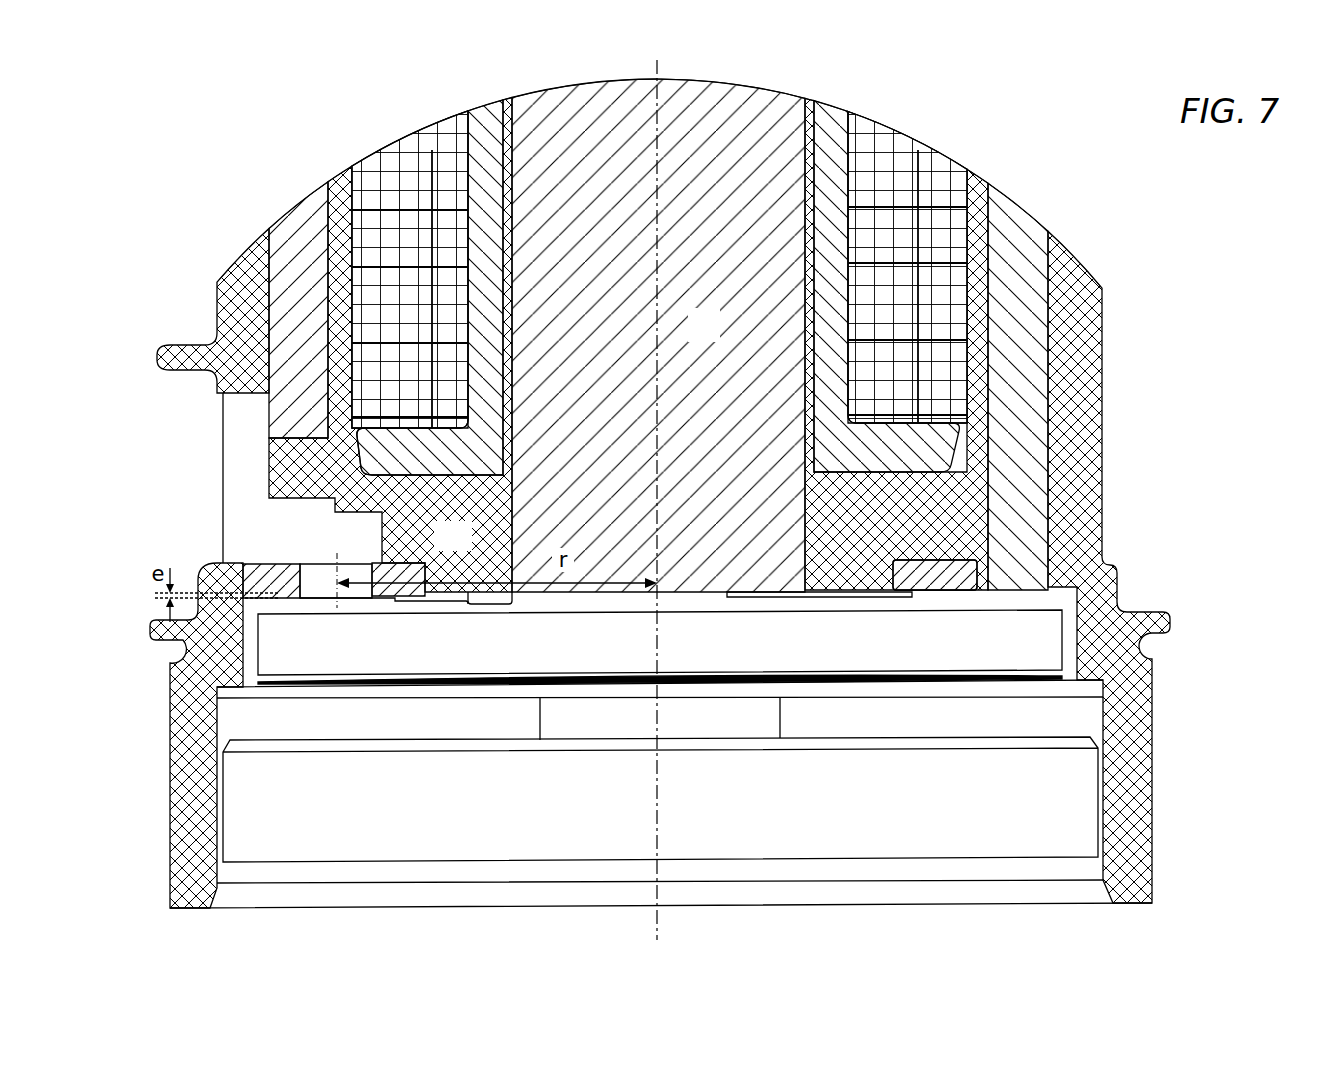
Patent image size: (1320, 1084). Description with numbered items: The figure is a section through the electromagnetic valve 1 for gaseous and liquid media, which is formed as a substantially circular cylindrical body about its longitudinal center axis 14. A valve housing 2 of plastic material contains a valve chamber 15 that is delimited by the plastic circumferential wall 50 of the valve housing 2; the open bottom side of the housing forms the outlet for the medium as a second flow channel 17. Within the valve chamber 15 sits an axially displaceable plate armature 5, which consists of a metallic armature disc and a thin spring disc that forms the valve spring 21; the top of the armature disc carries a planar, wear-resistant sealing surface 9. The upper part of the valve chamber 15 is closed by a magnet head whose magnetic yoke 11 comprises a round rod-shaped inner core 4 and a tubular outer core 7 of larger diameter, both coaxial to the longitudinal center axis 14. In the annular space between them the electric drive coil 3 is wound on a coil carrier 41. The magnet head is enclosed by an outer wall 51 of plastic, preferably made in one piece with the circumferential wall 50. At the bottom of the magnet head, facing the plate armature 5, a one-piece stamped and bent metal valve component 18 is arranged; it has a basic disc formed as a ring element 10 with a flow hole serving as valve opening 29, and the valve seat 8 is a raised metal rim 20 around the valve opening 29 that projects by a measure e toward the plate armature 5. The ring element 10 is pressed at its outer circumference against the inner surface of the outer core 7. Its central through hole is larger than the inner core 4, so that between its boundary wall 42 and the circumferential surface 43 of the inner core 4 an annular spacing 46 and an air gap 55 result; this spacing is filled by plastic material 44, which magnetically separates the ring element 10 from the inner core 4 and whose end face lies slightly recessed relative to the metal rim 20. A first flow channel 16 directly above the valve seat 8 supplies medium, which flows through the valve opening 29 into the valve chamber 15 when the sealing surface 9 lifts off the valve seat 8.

The electromagnetic valve 1 is at (250, 198).
The valve housing 2 is at (1185, 659).
The electric drive coil 3 is at (400, 178).
The inner core 4 is at (712, 338).
The plate armature 5 is at (258, 648).
The outer core 7 is at (291, 324).
The valve seat 8 is at (372, 602).
The sealing surface 9 is at (1005, 607).
The ring element 10 is at (285, 572).
The magnetic yoke 11 is at (1050, 364).
The longitudinal center axis 14 is at (657, 790).
The valve chamber 15 is at (1070, 656).
The first flow channel 16 is at (233, 443).
The second flow channel 17 is at (1000, 900).
The valve component 18 is at (257, 565).
The metal rim 20 is at (390, 604).
The valve spring 21 is at (850, 681).
The valve opening 29 is at (318, 600).
The coil carrier 41 is at (835, 180).
The boundary wall 42 is at (892, 592).
The circumferential surface 43 is at (800, 557).
The plastic material 44 is at (465, 549).
The annular spacing 46 is at (468, 604).
The circumferential wall 50 is at (176, 775).
The outer wall 51 is at (1085, 300).
The air gap 55 is at (455, 572).